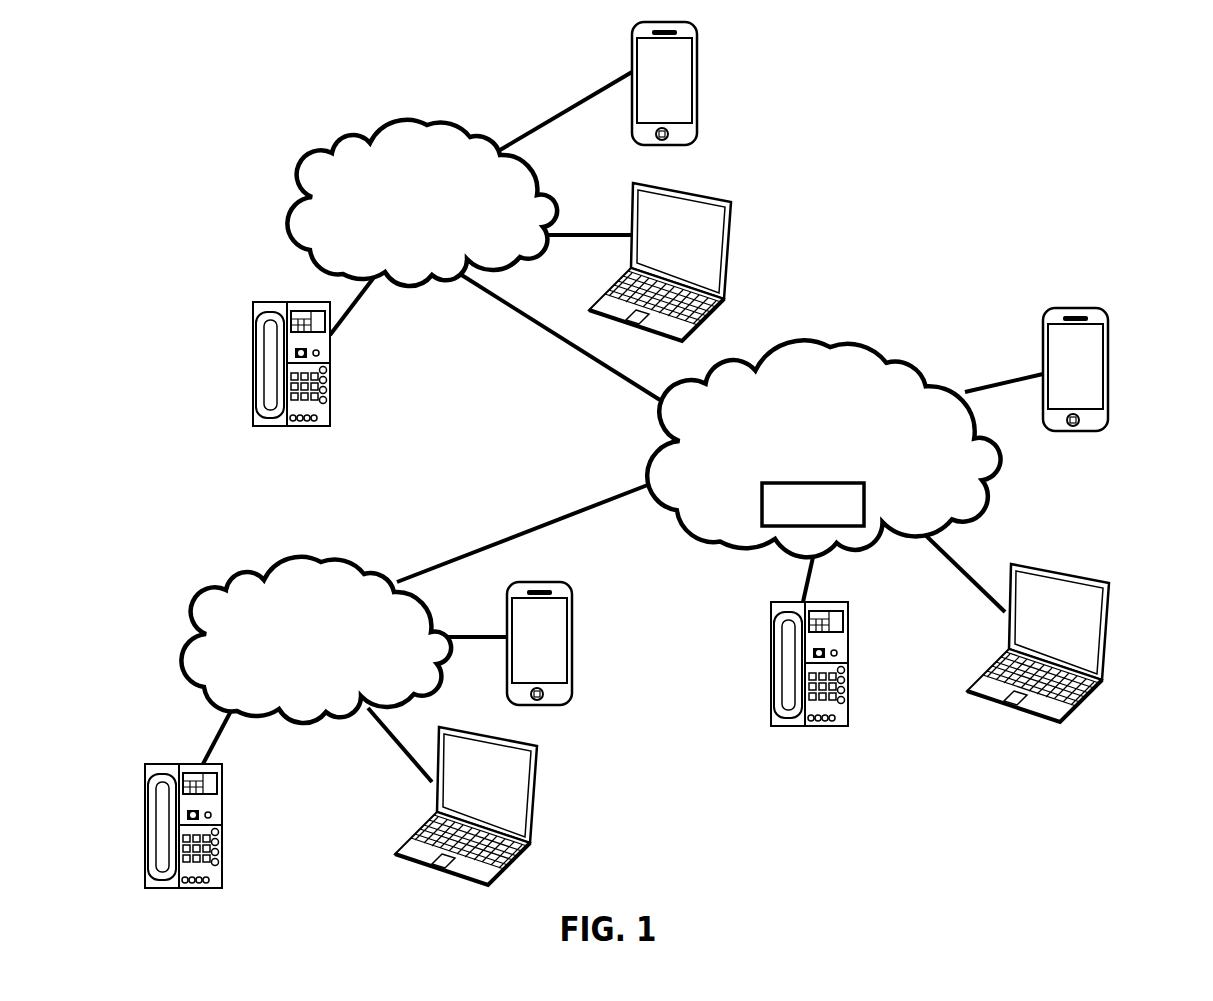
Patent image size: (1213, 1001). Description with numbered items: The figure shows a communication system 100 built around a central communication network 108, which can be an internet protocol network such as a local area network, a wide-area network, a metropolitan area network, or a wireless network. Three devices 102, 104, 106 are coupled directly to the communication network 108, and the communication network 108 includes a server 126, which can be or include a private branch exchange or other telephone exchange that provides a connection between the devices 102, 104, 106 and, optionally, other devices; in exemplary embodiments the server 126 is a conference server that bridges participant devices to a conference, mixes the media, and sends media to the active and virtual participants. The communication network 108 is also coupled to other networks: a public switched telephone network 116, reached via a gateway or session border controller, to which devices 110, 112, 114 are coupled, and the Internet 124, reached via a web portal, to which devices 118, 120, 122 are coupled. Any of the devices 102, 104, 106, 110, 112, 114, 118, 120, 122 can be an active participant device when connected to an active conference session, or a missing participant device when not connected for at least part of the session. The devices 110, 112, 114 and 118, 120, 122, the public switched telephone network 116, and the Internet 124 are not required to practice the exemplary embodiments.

The communication system 100 is at (1084, 75).
The device 102 is at (1107, 360).
The device 104 is at (1107, 630).
The device 106 is at (848, 657).
The communication network 108 is at (820, 337).
The device 110 is at (572, 645).
The device 112 is at (533, 800).
The device 114 is at (223, 812).
The public switched telephone network (PSTN) 116 is at (310, 553).
The device 118 is at (697, 70).
The device 120 is at (733, 243).
The device 122 is at (330, 373).
The Internet 124 is at (417, 118).
The server 126 is at (864, 488).